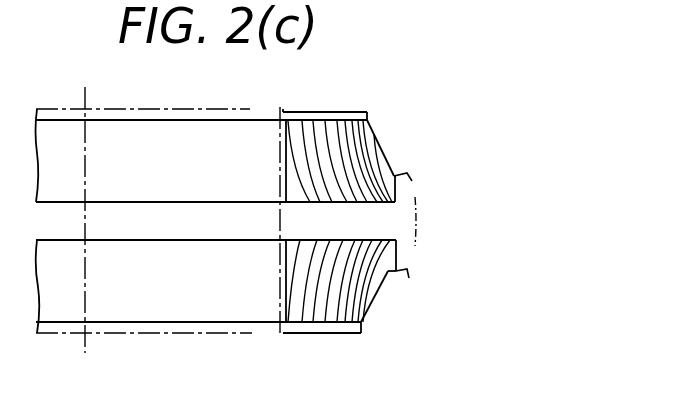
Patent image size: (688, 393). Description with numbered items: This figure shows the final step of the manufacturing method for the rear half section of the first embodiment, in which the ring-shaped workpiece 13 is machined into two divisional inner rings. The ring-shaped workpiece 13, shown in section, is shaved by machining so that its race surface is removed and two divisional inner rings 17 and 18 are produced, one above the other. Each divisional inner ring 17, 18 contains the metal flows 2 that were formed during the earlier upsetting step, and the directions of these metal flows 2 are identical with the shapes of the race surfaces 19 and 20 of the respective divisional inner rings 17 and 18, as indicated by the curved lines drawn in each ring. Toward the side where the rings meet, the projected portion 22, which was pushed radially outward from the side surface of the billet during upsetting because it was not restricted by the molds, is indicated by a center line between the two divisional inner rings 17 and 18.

The metal flows 2 is at (358, 178).
The ring-shaped workpiece 13 is at (300, 110).
The divisional inner ring 17 is at (398, 189).
The divisional inner ring 18 is at (398, 256).
The race surface 19 is at (407, 173).
The race surface 20 is at (391, 274).
The projected portion 22 is at (418, 242).